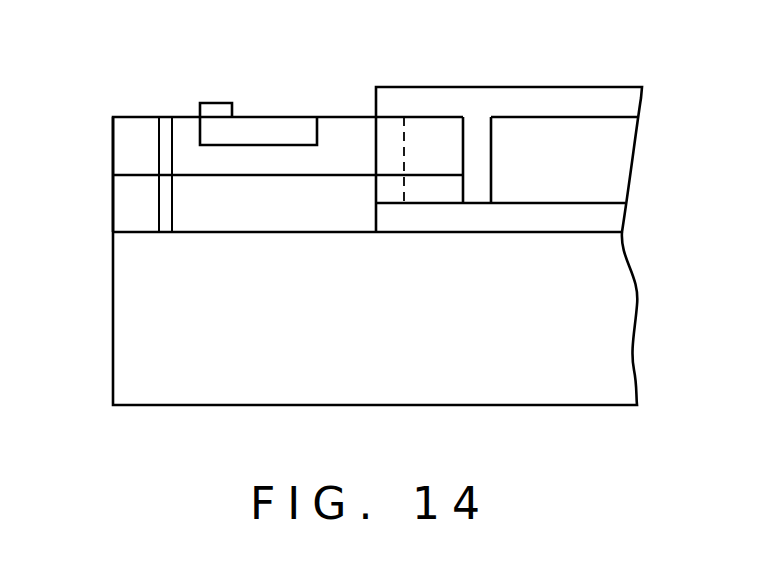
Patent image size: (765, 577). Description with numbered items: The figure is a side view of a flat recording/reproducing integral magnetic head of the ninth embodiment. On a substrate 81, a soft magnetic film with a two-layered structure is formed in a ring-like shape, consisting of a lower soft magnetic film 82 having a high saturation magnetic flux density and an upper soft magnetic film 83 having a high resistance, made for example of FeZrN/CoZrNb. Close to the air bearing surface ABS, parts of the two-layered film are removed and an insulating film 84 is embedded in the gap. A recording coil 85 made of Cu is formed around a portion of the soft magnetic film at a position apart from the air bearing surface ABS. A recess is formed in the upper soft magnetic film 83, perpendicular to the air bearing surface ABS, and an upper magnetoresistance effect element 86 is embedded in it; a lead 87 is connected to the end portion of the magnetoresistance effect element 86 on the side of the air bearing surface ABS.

The substrate 81 is at (478, 393).
The soft magnetic film 82 is at (127, 208).
The soft magnetic film 83 is at (127, 147).
The insulating film 84 is at (165, 118).
The recording coil 85 is at (578, 98).
The magnetoresistance effect element 86 is at (285, 122).
The lead 87 is at (218, 107).
The air bearing surface ABS is at (113, 130).